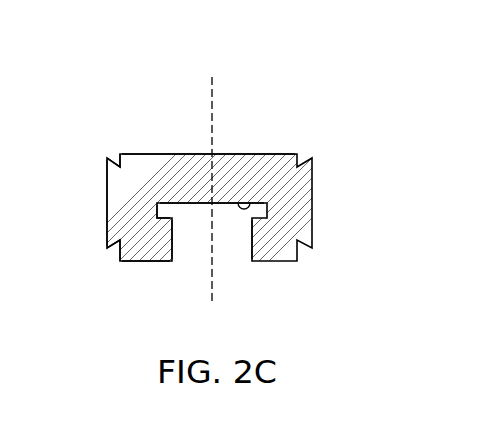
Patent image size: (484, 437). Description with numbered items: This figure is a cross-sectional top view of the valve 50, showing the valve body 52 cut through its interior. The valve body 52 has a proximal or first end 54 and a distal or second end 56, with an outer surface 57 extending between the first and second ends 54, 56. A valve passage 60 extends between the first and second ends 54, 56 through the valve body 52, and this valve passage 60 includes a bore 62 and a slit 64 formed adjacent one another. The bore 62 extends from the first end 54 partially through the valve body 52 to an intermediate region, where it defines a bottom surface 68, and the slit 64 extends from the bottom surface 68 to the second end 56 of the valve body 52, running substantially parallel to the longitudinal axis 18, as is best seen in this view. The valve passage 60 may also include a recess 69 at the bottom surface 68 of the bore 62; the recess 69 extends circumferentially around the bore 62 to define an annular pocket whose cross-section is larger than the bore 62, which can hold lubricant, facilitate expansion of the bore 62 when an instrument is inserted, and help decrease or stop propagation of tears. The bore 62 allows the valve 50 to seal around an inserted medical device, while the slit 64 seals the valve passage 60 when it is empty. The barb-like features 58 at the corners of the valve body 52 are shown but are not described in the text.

The longitudinal axis 18 is at (212, 103).
The valve 50 is at (347, 140).
The valve body 52 is at (313, 203).
The first end 54 is at (140, 261).
The second end 56 is at (146, 154).
The outer surface 57 is at (107, 222).
The barb 58 is at (110, 157).
The valve passage 60 is at (189, 240).
The bore 62 is at (250, 234).
The slit 64 is at (213, 173).
The bottom surface 68 is at (250, 207).
The recess 69 is at (166, 212).